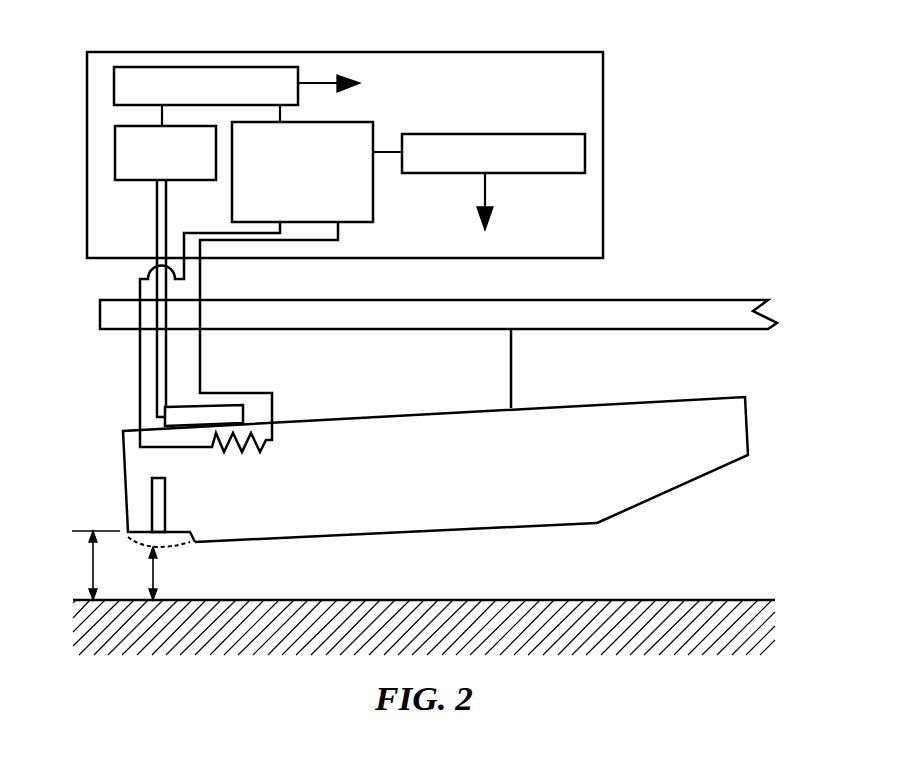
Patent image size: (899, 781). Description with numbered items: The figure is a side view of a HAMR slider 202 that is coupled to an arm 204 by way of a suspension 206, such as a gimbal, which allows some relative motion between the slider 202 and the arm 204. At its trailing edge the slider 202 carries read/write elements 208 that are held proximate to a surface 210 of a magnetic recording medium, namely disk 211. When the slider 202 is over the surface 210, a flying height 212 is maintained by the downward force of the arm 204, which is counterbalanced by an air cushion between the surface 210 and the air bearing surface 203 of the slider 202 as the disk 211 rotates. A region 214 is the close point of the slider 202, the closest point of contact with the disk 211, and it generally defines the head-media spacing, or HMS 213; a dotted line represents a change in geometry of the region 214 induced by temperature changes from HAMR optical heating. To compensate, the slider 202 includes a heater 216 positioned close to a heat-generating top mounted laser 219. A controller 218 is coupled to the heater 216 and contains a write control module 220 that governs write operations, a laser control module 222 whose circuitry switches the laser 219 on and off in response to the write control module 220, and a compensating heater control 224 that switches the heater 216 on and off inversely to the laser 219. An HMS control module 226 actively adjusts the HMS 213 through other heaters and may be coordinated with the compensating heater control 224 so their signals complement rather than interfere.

The slider 202 is at (640, 410).
The air bearing surface 203 is at (458, 523).
The arm 204 is at (693, 305).
The suspension 206 is at (513, 364).
The read/write elements 208 is at (152, 515).
The surface of magnetic recording medium 210 is at (645, 600).
The disk 211 is at (660, 643).
The flying height 212 is at (79, 565).
The head-media spacing (HMS) 213 is at (132, 573).
The close point region 214 is at (180, 556).
The compensating heater 216 is at (253, 435).
The controller 218 is at (376, 52).
The laser 219 is at (207, 405).
The write control module 220 is at (205, 67).
The laser control module 222 is at (115, 160).
The compensating heater control 224 is at (357, 121).
The HMS control module 226 is at (585, 152).